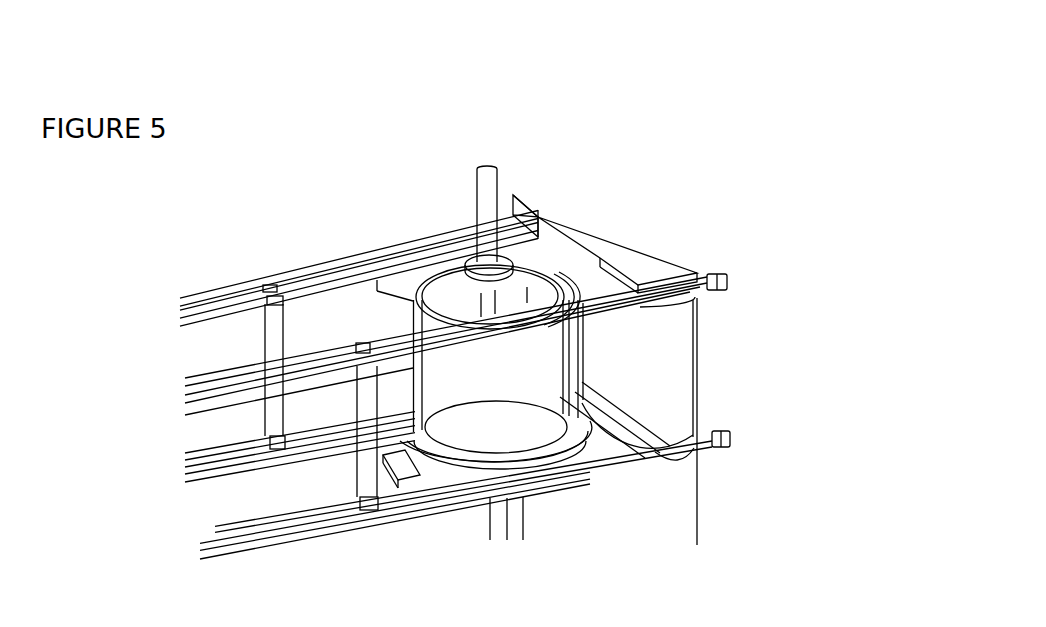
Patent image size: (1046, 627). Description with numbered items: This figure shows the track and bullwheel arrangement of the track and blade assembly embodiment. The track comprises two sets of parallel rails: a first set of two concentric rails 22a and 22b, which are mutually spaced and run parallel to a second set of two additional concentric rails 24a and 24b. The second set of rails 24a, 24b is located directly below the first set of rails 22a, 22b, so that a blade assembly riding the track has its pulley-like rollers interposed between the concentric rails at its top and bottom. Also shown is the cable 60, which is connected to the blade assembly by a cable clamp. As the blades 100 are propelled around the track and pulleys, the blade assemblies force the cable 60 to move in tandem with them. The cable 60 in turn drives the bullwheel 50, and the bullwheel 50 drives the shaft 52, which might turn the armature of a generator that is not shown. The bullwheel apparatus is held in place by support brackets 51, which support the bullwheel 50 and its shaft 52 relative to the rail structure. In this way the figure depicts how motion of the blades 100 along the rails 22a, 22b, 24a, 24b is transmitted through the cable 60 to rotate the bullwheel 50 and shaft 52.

The concentric rail 22a is at (333, 359).
The concentric rail 22b is at (398, 335).
The cable 60 is at (297, 294).
The shaft 52 is at (494, 184).
The support brackets 51 is at (558, 235).
The bullwheel 50 is at (552, 285).
The blade 100 is at (348, 461).
The concentric rail 24b is at (415, 500).
The concentric rail 24a is at (595, 456).